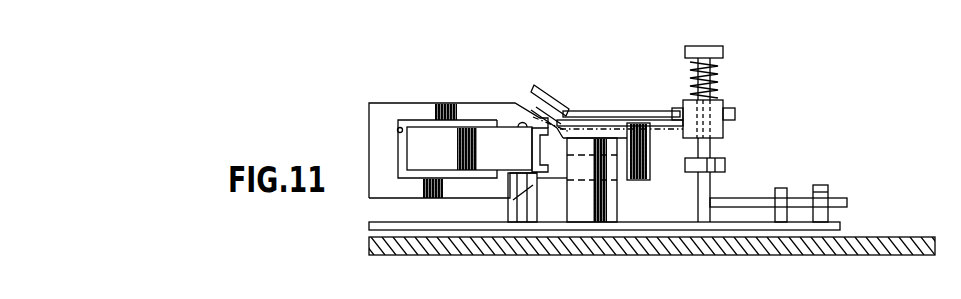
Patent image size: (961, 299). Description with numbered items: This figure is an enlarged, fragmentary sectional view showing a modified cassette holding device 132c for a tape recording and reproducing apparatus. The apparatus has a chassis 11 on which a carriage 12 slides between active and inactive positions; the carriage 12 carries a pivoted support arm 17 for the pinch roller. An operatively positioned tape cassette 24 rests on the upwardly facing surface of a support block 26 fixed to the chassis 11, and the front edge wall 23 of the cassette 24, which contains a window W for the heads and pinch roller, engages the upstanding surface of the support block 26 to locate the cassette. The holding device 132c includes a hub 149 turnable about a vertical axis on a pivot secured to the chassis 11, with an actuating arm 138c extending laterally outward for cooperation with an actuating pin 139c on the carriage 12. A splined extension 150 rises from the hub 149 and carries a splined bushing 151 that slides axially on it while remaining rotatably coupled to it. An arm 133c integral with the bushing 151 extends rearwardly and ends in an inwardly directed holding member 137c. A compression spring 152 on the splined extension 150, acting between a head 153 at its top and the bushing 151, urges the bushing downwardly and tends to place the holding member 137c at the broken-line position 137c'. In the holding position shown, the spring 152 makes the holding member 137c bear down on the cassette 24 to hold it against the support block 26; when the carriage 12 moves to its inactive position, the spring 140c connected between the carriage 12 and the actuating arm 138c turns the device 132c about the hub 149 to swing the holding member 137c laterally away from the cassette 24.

The chassis 11 is at (749, 247).
The carriage 12 is at (383, 222).
The front edge wall 23 is at (385, 103).
The tape cassette 24 is at (412, 102).
The pivoted support arm 17 is at (450, 132).
The window W is at (397, 129).
The support block 26 is at (615, 203).
The holding member 137c is at (607, 106).
The holding member broken-line position 137c' is at (619, 157).
The arm 133c is at (682, 116).
The cassette holding device 132c is at (807, 83).
The splined bushing 151 is at (723, 103).
The compression spring 152 is at (730, 58).
The head 153 is at (718, 48).
The splined extension 150 is at (715, 143).
The hub 149 is at (710, 182).
The actuating arm 138c is at (897, 201).
The actuating pin 139c is at (789, 175).
The spring 140c is at (876, 180).